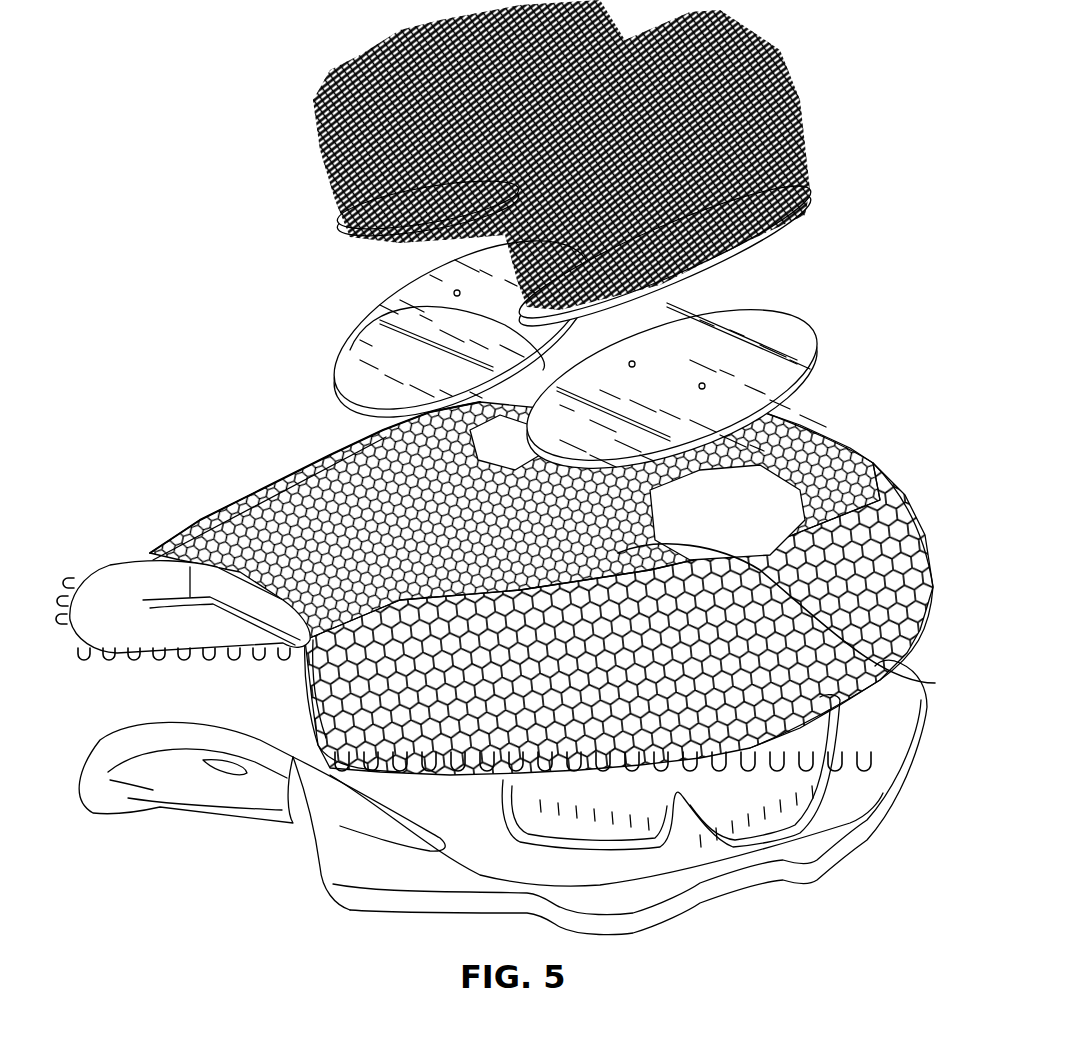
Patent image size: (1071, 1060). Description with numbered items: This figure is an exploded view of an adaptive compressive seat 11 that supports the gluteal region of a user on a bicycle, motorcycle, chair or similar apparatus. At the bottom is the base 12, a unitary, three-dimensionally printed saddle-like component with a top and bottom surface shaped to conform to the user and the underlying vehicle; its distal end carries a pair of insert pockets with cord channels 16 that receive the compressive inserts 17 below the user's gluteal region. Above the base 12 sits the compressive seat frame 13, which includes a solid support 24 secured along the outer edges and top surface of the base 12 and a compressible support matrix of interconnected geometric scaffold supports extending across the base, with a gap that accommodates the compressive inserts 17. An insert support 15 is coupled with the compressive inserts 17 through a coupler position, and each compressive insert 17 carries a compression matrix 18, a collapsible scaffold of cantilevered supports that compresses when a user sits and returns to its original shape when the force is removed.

The adaptive compressive seat 11 is at (846, 416).
The base 12 is at (847, 827).
The compressive seat frame 13 is at (900, 487).
The insert support 15 is at (787, 318).
The cord channel 16 is at (417, 330).
The compressive insert 17 is at (813, 212).
The compression matrix 18 is at (783, 83).
The solid support 24 is at (935, 683).